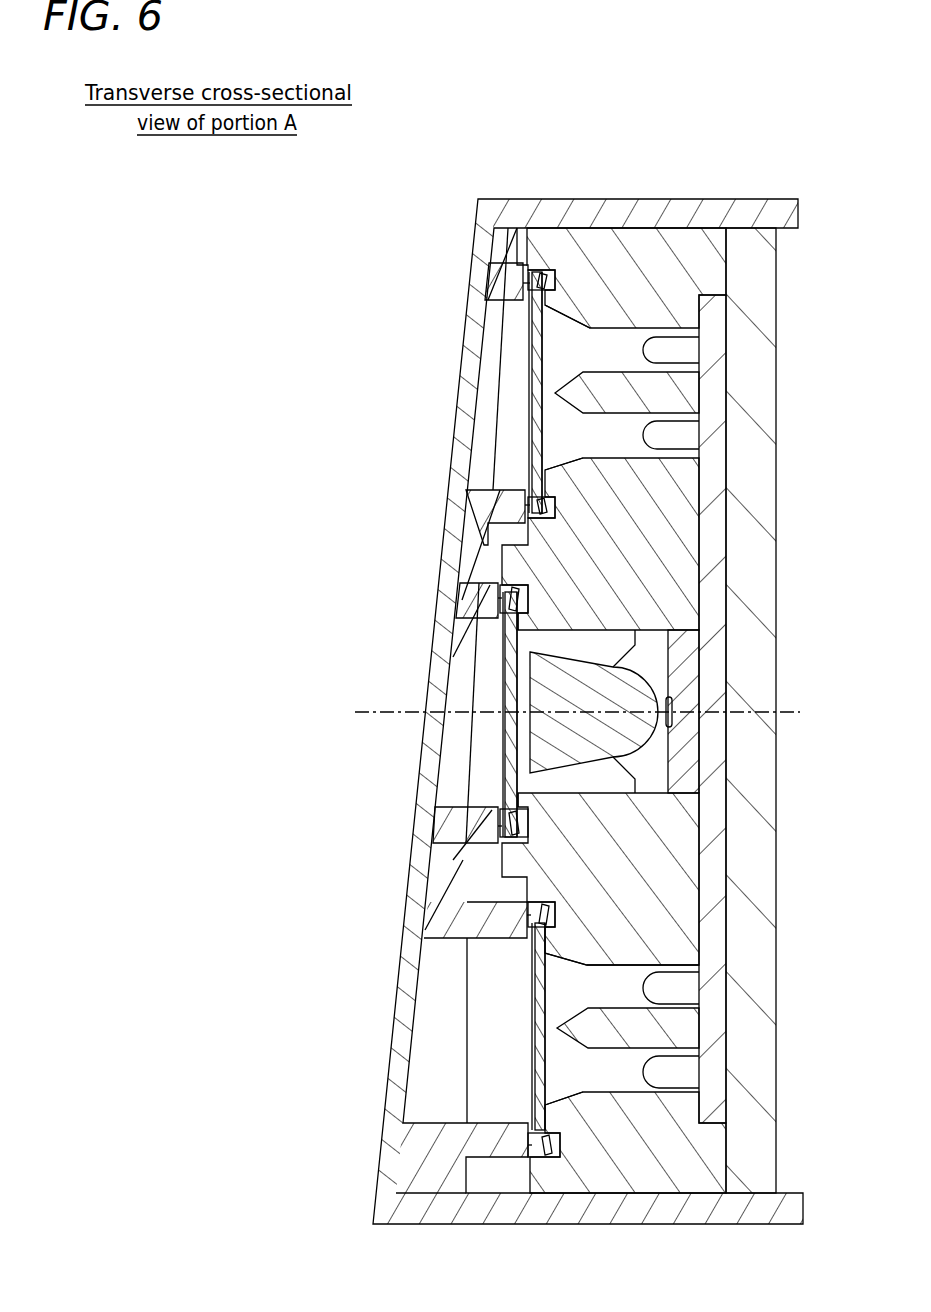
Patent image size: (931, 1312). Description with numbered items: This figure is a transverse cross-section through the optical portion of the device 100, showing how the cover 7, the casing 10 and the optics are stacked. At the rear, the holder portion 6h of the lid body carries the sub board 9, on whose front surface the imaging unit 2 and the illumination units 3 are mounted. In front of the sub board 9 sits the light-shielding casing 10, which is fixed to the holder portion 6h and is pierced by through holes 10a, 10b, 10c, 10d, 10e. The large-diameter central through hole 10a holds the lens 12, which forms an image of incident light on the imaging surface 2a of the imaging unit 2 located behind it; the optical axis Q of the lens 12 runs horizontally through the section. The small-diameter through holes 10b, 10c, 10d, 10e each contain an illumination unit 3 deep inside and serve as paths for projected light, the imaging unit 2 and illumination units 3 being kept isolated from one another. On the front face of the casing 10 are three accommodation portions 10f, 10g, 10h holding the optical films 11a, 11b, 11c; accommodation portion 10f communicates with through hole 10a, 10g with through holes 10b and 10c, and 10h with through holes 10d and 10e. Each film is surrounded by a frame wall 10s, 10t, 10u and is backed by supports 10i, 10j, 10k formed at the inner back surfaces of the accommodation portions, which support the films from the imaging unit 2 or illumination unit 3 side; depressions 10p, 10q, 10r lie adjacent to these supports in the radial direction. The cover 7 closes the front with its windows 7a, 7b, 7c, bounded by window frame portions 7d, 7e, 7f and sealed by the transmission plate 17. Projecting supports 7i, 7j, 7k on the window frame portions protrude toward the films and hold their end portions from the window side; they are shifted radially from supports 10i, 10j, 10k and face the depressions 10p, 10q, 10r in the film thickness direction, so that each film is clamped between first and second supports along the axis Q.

The optical apparatus 100 is at (310, 270).
The cover 7 is at (568, 213).
The window 7a is at (468, 667).
The window 7b is at (492, 355).
The window 7c is at (438, 1025).
The window frame portion 7d is at (478, 605).
The window frame portion 7e is at (500, 293).
The window frame portion 7f is at (460, 920).
The support 7i is at (500, 598).
The support 7j is at (530, 283).
The support 7k is at (535, 908).
The transmission plate 17 is at (497, 250).
The holder portion 6h is at (778, 290).
The sub board 9 is at (735, 485).
The casing 10 is at (588, 674).
The through hole 10a is at (665, 780).
The through hole 10b is at (617, 465).
The through hole 10c is at (620, 340).
The through hole 10d is at (622, 978).
The through hole 10e is at (612, 1082).
The accommodation portion 10f is at (510, 732).
The accommodation portion 10g is at (535, 408).
The accommodation portion 10h is at (540, 1048).
The support 10i is at (528, 630).
The support 10j is at (540, 318).
The support 10k is at (548, 940).
The depression 10p is at (528, 600).
The depression 10q is at (548, 280).
The depression 10r is at (556, 915).
The frame wall 10s is at (510, 752).
The frame wall 10t is at (522, 432).
The frame wall 10u is at (535, 1077).
The optical film 11a is at (505, 690).
The optical film 11b is at (530, 395).
The optical film 11c is at (533, 970).
The lens 12 is at (560, 708).
The imaging unit 2 is at (656, 711).
The imaging surface 2a is at (668, 700).
The illumination unit 3 is at (690, 348).
The optical axis Q is at (569, 712).